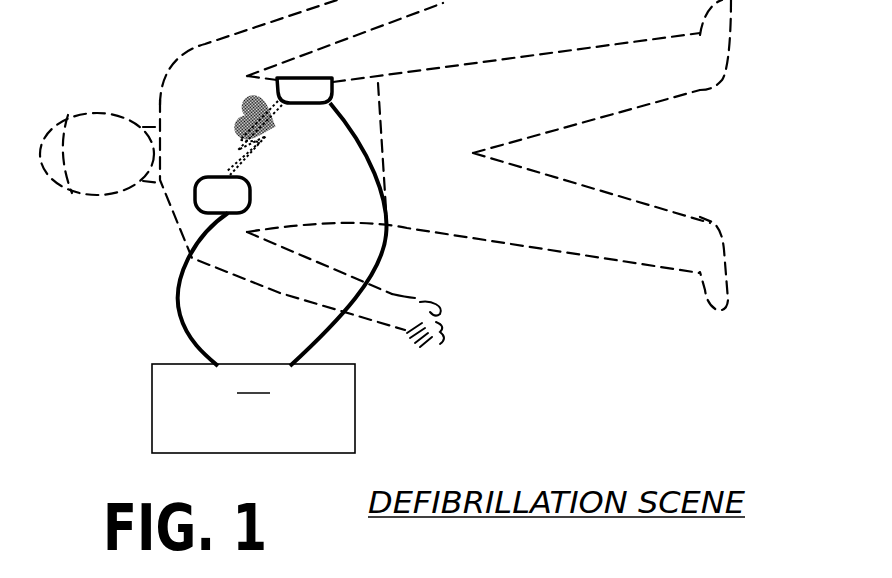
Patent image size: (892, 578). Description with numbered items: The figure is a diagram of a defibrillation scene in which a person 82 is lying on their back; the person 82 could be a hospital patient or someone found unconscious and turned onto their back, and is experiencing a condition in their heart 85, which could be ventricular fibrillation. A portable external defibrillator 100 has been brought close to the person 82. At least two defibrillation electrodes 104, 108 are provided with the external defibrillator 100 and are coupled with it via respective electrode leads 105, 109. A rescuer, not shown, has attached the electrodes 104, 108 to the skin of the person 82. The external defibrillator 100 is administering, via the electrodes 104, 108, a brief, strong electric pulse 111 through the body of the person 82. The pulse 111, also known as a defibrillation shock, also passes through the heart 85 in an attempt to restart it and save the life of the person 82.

The person 82 is at (167, 82).
The heart 85 is at (240, 97).
The external defibrillator 100 is at (253, 408).
The defibrillation electrode 104 is at (194, 203).
The electrode lead 105 is at (175, 303).
The defibrillation electrode 108 is at (320, 77).
The electrode lead 109 is at (313, 347).
The electric pulse 111 is at (258, 158).